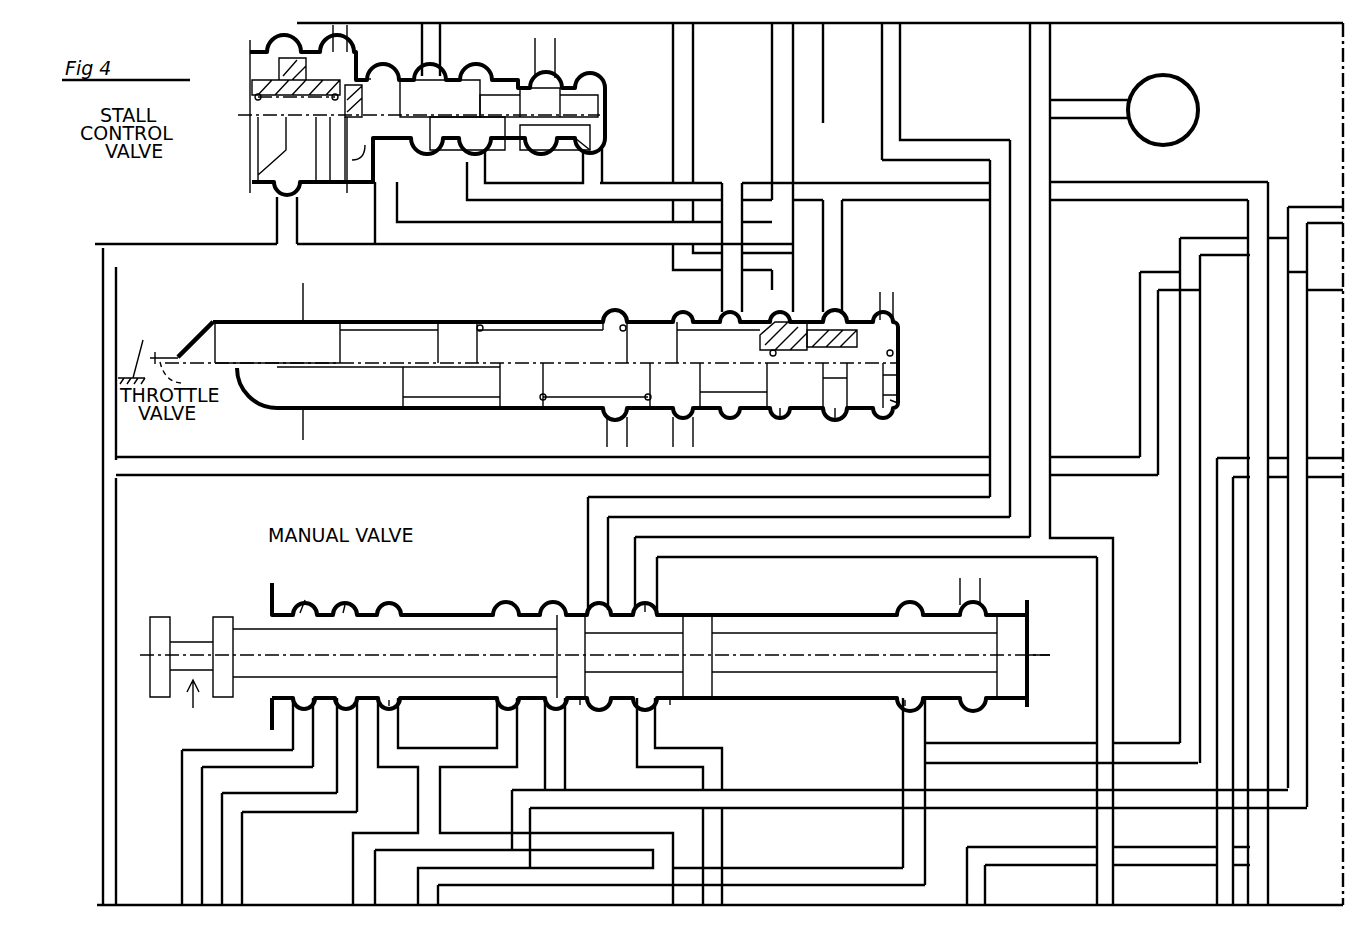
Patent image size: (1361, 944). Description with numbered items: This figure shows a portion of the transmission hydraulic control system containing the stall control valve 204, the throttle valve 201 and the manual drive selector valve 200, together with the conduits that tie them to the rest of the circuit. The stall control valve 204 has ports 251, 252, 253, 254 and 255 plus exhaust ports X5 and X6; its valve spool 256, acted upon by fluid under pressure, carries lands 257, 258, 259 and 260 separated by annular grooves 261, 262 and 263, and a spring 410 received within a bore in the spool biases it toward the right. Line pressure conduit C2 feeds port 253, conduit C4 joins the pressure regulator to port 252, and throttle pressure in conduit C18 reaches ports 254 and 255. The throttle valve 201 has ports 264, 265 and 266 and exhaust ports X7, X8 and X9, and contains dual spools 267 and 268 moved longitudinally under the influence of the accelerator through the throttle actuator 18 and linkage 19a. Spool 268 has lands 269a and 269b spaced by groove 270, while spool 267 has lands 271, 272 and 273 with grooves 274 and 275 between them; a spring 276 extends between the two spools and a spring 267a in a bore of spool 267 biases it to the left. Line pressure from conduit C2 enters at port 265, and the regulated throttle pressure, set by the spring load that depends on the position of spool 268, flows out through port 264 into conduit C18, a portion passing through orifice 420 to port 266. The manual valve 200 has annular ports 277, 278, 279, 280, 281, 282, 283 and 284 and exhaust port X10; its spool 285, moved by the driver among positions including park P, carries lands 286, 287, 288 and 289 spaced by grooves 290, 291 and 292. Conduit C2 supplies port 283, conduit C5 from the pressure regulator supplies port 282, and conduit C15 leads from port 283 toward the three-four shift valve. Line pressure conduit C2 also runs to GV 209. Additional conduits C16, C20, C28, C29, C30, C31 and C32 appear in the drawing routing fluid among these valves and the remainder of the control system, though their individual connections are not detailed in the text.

The stall control valve 204 is at (242, 157).
The spring 410 is at (255, 97).
The valve spool 256 is at (257, 178).
The port 251 is at (277, 198).
The land 257 is at (322, 185).
The land 258 is at (348, 190).
The annular groove 261 is at (352, 165).
The annular groove 262 is at (415, 150).
The port 254 is at (462, 185).
The land 259 is at (498, 155).
The annular groove 263 is at (546, 155).
The land 260 is at (600, 122).
The port 255 is at (596, 155).
The port 252 is at (385, 72).
The port 253 is at (436, 76).
The exhaust port X5 is at (348, 38).
The exhaust port X6 is at (556, 46).
The conduit C16 is at (148, 244).
The line pressure conduit C2 is at (692, 55).
The conduit C4 is at (812, 52).
The conduit C18 is at (733, 183).
The conduit C5 is at (900, 48).
The GV 209 is at (1180, 77).
The conduit C20 is at (1313, 207).
The conduit C32 is at (1200, 350).
The conduit C29 is at (182, 836).
The conduit C30 is at (242, 862).
The conduit C31 is at (418, 802).
The conduit C15 is at (722, 832).
The conduit C28 is at (1217, 828).
The throttle valve 201 is at (398, 320).
The land 269a is at (260, 322).
The groove 270 is at (370, 322).
The land 269b is at (452, 322).
The spring 276 is at (488, 324).
The land 271 is at (627, 320).
The groove 274 is at (650, 322).
The port 264 is at (725, 315).
The orifice 420 is at (835, 290).
The land 273 is at (855, 320).
The land 272 is at (748, 345).
The groove 275 is at (818, 350).
The spring 267a is at (898, 345).
The valve spool 267 is at (900, 380).
The port 266 is at (848, 415).
The port 265 is at (785, 415).
The exhaust port X7 is at (606, 440).
The exhaust port X8 is at (694, 437).
The exhaust port X9 is at (894, 298).
The valve spool 268 is at (225, 322).
The throttle actuator 18 is at (141, 338).
The linkage 19a is at (190, 376).
The manual drive selector valve 200 is at (442, 613).
The valve spool 285 is at (158, 615).
The land 286 is at (222, 615).
The groove 290 is at (255, 628).
The annular port 277 is at (303, 605).
The annular port 278 is at (345, 605).
The annular port 282 is at (596, 605).
The annular port 283 is at (650, 605).
The land 288 is at (700, 618).
The land 289 is at (1030, 610).
The exhaust port X10 is at (981, 580).
The park position P is at (198, 701).
The annular port 279 is at (392, 706).
The annular port 280 is at (500, 712).
The annular port 281 is at (558, 710).
The land 287 is at (578, 710).
The groove 291 is at (665, 705).
The groove 292 is at (775, 700).
The annular port 284 is at (905, 712).